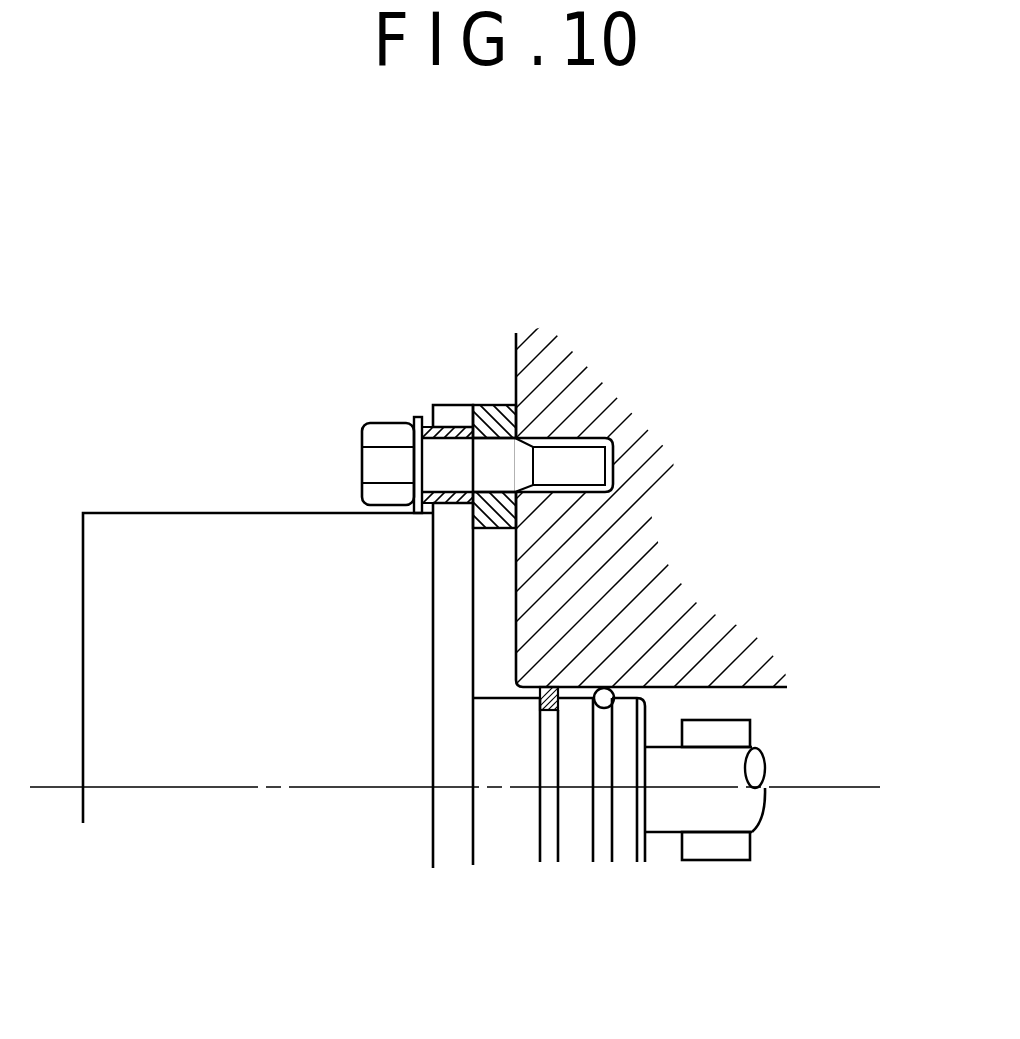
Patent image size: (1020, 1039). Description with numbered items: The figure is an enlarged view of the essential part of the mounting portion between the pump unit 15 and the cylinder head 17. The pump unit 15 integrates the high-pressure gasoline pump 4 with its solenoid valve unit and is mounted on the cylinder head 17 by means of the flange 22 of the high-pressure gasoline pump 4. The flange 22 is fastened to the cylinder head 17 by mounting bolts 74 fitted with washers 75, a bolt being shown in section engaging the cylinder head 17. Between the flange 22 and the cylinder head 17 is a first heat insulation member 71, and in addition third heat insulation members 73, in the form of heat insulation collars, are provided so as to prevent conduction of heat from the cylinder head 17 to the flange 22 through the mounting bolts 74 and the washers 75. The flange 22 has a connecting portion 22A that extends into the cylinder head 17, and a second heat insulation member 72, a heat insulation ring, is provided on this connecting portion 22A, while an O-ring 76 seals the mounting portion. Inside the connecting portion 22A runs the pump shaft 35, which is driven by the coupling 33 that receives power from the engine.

The pump unit 15 is at (132, 470).
The high-pressure gasoline pump 4 is at (290, 682).
The cylinder head 17 is at (767, 428).
The flange 22 is at (449, 822).
The connecting portion 22A is at (630, 723).
The coupling 33 is at (708, 850).
The pump shaft 35 is at (748, 805).
The first heat insulation member 71 is at (497, 417).
The second heat insulation member 72 is at (549, 688).
The third heat insulation members 73 is at (423, 417).
The mounting bolts 74 is at (387, 463).
The washers 75 is at (412, 417).
The O-ring 76 is at (609, 688).